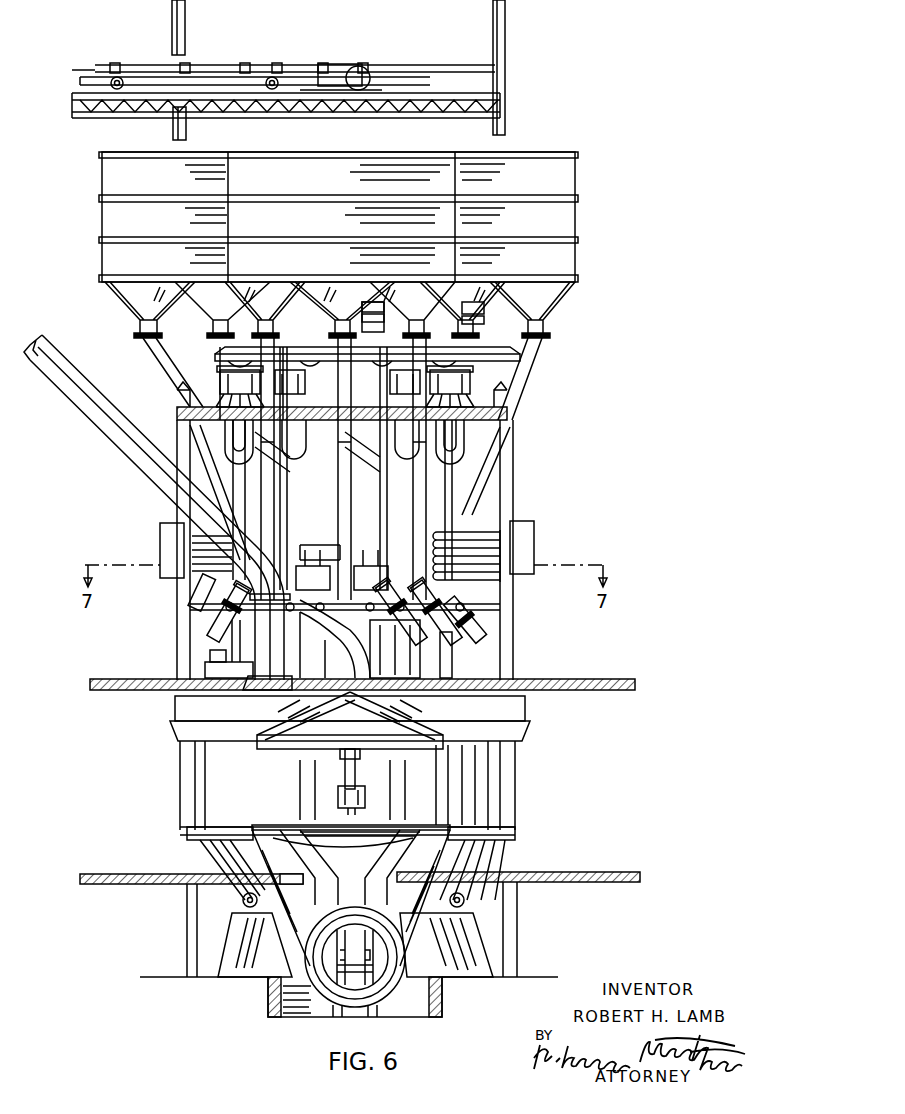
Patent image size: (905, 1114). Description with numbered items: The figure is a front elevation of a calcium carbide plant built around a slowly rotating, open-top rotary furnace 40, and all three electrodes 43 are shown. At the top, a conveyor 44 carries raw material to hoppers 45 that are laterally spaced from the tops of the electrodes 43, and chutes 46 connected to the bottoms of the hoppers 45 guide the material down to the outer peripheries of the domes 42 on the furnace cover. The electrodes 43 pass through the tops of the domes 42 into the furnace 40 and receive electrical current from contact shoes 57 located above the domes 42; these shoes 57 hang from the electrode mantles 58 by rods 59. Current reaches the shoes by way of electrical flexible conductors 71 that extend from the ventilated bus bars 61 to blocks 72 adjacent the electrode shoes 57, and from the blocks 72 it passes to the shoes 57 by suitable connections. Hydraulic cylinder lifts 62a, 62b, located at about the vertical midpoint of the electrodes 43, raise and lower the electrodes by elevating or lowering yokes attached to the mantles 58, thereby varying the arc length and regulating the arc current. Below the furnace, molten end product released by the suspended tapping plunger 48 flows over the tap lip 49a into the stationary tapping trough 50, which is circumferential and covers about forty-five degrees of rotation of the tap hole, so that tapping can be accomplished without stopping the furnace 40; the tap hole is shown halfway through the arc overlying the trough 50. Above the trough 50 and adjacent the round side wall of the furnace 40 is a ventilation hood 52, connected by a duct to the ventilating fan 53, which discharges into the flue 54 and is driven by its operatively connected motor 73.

The rotary furnace 40 is at (190, 803).
The domes 42 is at (450, 668).
The electrodes 43 is at (373, 324).
The conveyor 44 is at (332, 62).
The hoppers 45 is at (312, 162).
The chutes 46 is at (150, 352).
The tapping plunger 48 is at (355, 786).
The tap lip 49a is at (366, 801).
The stationary tapping trough 50 is at (351, 921).
The ventilation hood 52 is at (350, 720).
The ventilating fan 53 is at (267, 657).
The flue 54 is at (145, 470).
The contact shoes 57 is at (495, 613).
The electrode mantles 58 is at (323, 469).
The rods 59 is at (326, 560).
The ventilated bus bar 61 is at (160, 534).
The hydraulic cylinder lift 62a is at (236, 388).
The hydraulic cylinder lift 62b is at (222, 366).
The electrical flexible conductors 71 is at (490, 528).
The blocks 72 is at (342, 570).
The motor 73 is at (210, 660).